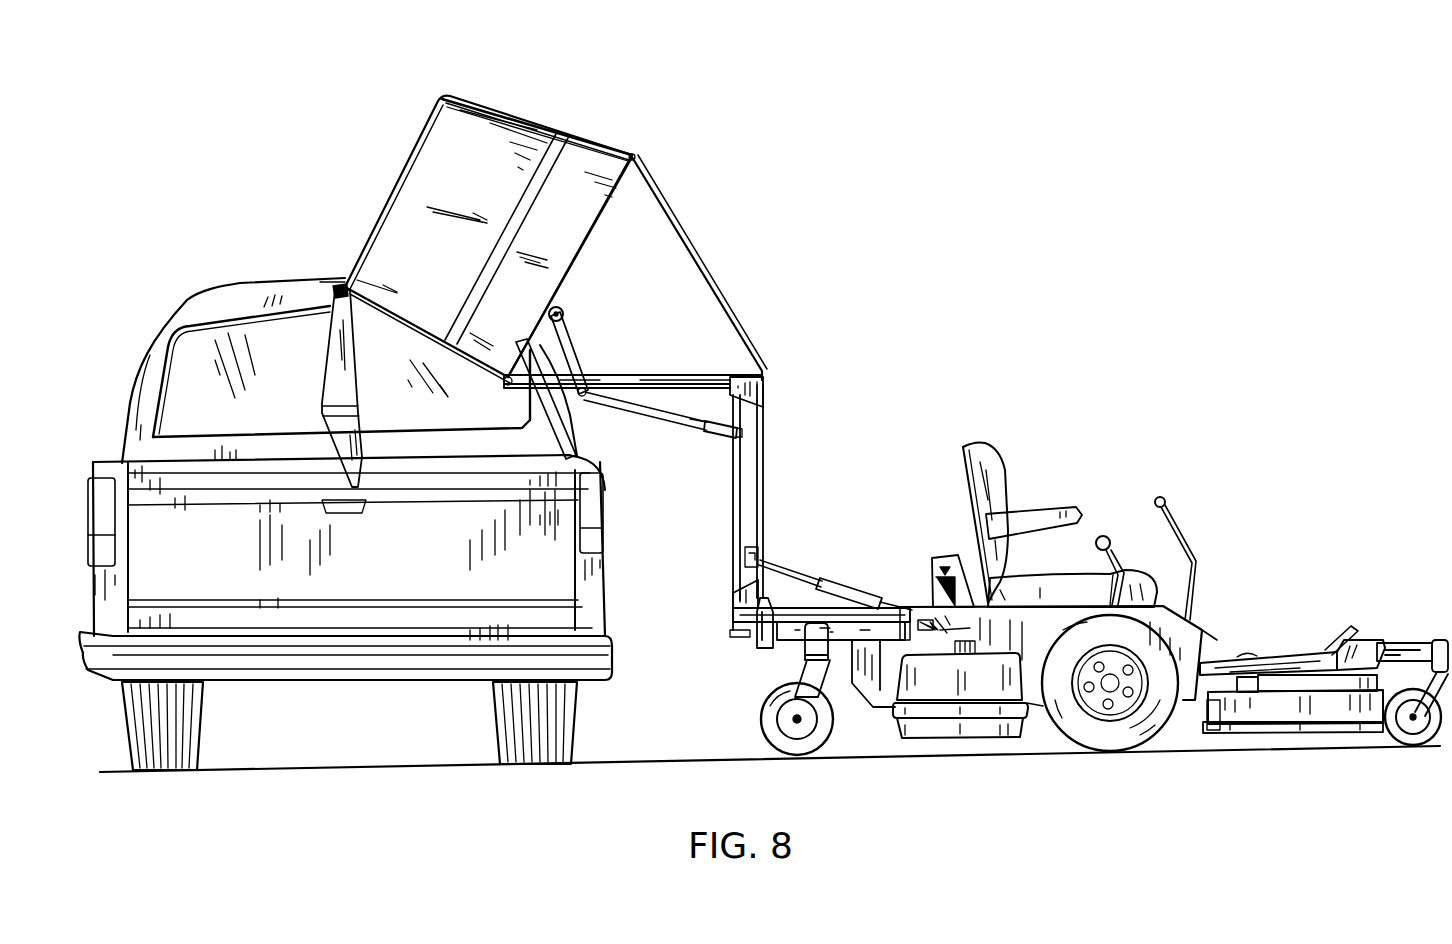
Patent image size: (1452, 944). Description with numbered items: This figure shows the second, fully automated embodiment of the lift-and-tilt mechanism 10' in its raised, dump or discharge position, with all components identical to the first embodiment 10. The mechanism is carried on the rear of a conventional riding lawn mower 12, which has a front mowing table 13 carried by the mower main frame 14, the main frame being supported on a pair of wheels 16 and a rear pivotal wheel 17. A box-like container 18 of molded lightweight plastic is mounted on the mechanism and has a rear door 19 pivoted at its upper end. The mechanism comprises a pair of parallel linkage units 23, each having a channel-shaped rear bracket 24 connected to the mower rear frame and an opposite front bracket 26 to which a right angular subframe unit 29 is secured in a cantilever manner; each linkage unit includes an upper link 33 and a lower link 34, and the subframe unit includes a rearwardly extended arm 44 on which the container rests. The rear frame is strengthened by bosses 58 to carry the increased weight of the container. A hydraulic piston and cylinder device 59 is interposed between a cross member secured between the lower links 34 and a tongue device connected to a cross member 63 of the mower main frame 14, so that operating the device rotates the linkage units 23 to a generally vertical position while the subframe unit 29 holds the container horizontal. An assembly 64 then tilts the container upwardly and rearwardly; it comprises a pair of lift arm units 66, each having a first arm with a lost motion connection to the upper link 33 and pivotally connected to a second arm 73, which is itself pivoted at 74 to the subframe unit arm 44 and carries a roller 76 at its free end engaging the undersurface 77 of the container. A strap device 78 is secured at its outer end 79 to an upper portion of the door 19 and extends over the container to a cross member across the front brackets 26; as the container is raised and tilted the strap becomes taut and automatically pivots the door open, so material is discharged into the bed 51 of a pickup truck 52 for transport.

The fully automated lift-and-tilt mechanism 10' is at (687, 408).
The lift-and-tilt mechanism 10 is at (687, 405).
The riding lawn mower 12 is at (1102, 489).
The mowing table 13 is at (1302, 643).
The mower main frame 14 is at (878, 690).
The wheels 16 is at (1148, 718).
The rear pivotal wheel 17 is at (762, 726).
The container 18 is at (486, 198).
The rear door 19 is at (330, 394).
The linkage units 23 is at (777, 509).
The rear bracket 24 is at (735, 603).
The front bracket 26 is at (757, 386).
The subframe unit 29 is at (637, 370).
The upper link 33 is at (730, 516).
The lower links 34 is at (766, 535).
The subframe unit arm 44 is at (676, 376).
The bed 51 is at (241, 446).
The pickup truck 52 is at (256, 278).
The bosses 58 is at (755, 642).
The hydraulic piston and cylinder device 59 is at (840, 582).
The cross member 63 is at (636, 414).
The assembly 64 is at (658, 432).
The lift arm unit 66 is at (690, 429).
The second arm 73 is at (570, 342).
The pivot 74 is at (563, 399).
The roller 76 is at (563, 314).
The undersurface 77 is at (575, 262).
The strap device 78 is at (537, 123).
The outer end 79 is at (327, 325).